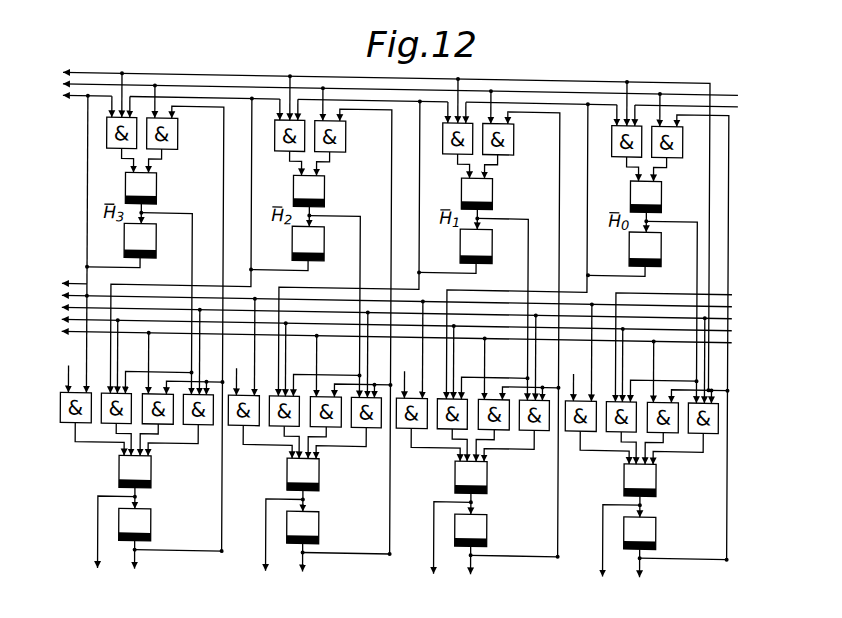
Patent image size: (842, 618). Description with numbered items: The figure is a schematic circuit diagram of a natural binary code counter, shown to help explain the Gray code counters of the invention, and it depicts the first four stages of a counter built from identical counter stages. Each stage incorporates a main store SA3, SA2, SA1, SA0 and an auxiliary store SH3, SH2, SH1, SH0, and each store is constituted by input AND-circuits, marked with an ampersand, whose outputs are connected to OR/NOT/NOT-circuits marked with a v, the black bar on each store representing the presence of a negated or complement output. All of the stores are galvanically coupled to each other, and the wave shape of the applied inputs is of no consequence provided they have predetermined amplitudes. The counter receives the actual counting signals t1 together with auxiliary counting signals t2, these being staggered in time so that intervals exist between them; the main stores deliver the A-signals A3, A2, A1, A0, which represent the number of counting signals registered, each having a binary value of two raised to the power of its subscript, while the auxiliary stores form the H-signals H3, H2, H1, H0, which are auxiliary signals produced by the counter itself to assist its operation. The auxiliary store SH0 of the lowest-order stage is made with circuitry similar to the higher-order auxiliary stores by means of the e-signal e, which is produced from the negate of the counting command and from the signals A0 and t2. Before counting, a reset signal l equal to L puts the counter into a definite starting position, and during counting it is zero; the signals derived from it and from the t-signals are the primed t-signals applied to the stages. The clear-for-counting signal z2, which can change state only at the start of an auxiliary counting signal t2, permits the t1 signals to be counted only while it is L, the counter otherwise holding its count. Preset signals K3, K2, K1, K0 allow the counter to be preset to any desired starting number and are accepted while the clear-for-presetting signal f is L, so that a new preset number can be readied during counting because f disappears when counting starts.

The auxiliary signal H3 is at (144, 255).
The auxiliary signal H2 is at (312, 258).
The auxiliary signal H1 is at (480, 261).
The auxiliary signal H0 is at (649, 264).
The auxiliary store SH3 is at (205, 211).
The auxiliary store SH2 is at (332, 196).
The auxiliary store SH1 is at (500, 199).
The auxiliary store SH0 is at (669, 202).
The preset signal K3 is at (69, 368).
The preset signal K2 is at (237, 371).
The preset signal K1 is at (405, 374).
The preset signal K0 is at (574, 377).
The main store SA3 is at (197, 514).
The main store SA2 is at (325, 489).
The main store SA1 is at (493, 492).
The main store SA0 is at (662, 495).
The count signal A3 is at (107, 586).
The count signal A2 is at (288, 555).
The count signal A1 is at (456, 558).
The count signal A0 is at (625, 560).
The auxiliary counting signal t2 is at (410, 87).
The e-signal e is at (407, 104).
The clear-for-counting signal z2 is at (682, 344).
The clear-for-presetting signal f is at (407, 303).
The reset signal l is at (744, 304).
The counting signal t1 is at (737, 330).